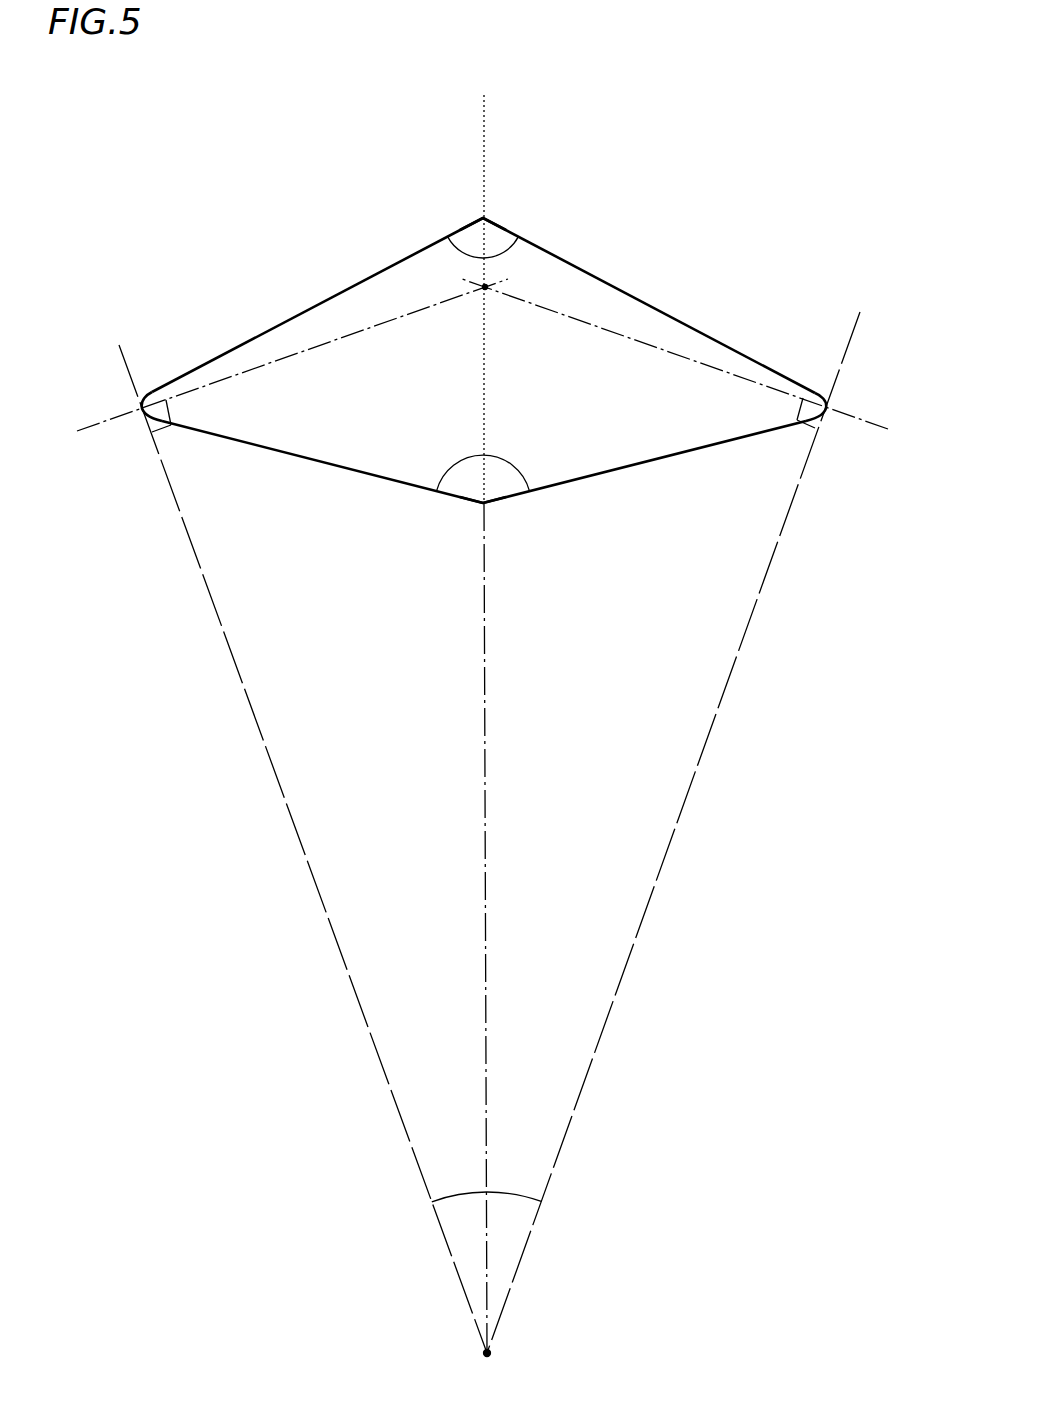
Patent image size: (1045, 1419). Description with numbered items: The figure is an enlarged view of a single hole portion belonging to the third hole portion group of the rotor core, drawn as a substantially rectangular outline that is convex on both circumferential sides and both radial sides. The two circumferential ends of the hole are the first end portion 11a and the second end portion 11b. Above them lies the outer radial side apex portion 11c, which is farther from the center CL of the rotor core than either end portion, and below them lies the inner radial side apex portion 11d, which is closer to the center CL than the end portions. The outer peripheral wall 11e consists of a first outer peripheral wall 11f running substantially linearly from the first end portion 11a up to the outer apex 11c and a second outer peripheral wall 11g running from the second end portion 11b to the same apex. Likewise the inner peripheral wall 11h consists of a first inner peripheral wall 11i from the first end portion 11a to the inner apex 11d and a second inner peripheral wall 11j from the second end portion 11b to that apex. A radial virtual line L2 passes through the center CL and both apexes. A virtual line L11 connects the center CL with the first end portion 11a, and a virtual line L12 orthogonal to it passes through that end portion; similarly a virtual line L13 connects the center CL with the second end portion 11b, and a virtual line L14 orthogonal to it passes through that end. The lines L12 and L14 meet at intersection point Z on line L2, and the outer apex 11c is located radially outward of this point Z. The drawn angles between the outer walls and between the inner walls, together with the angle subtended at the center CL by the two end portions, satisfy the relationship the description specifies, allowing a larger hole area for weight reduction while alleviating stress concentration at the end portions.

The first end portion 11a is at (157, 388).
The second end portion 11b is at (813, 393).
The outer radial side apex portion 11c is at (487, 222).
The inner radial side apex portion 11d is at (485, 500).
The outer peripheral wall 11e is at (483, 287).
The first outer peripheral wall 11f is at (322, 303).
The second outer peripheral wall 11g is at (662, 313).
The inner peripheral wall 11h is at (484, 488).
The first inner peripheral wall 11i is at (314, 458).
The second inner peripheral wall 11j is at (645, 455).
The virtual line L2 is at (483, 709).
The virtual line L11 is at (290, 833).
The virtual line L12 is at (269, 365).
The virtual line L13 is at (685, 820).
The virtual line L14 is at (701, 365).
The intersection point Z is at (481, 292).
The center of the rotor core CL is at (506, 1357).